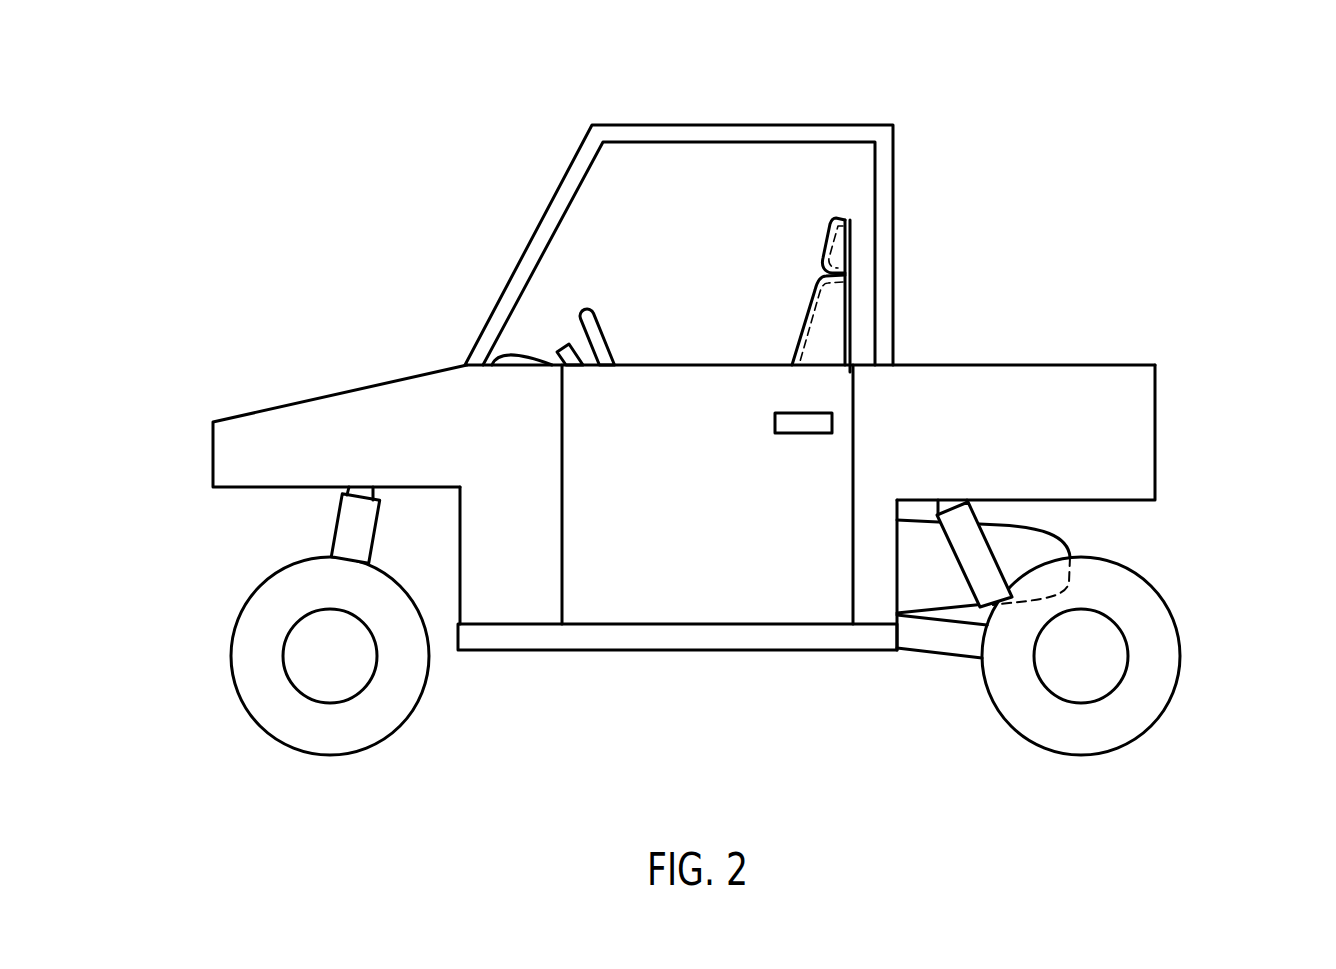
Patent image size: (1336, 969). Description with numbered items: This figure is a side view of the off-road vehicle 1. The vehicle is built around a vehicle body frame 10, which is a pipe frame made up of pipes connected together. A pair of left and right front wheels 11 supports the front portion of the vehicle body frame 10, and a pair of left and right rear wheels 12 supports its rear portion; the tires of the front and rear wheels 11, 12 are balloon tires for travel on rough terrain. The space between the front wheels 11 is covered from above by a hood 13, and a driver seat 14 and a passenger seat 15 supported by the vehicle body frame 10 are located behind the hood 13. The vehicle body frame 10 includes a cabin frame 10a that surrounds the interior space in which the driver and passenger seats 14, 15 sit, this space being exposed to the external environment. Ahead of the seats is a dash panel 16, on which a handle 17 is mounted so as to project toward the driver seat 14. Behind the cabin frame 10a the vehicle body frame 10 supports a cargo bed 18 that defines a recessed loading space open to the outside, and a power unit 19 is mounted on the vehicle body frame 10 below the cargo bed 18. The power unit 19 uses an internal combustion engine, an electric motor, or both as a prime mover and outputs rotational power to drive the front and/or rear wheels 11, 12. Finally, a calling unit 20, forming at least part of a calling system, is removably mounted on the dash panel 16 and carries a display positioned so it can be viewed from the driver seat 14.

The off-road vehicle 1 is at (383, 168).
The vehicle body frame 10 is at (560, 653).
The cabin frame 10a is at (568, 170).
The front wheels 11 is at (231, 644).
The rear wheels 12 is at (1181, 647).
The hood 13 is at (300, 400).
The driver seat 14 is at (808, 310).
The passenger seat 15 is at (778, 295).
The dash panel 16 is at (517, 353).
The handle 17 is at (592, 305).
The cargo bed 18 is at (1098, 365).
The power unit 19 is at (1050, 527).
The calling unit 20 is at (562, 348).